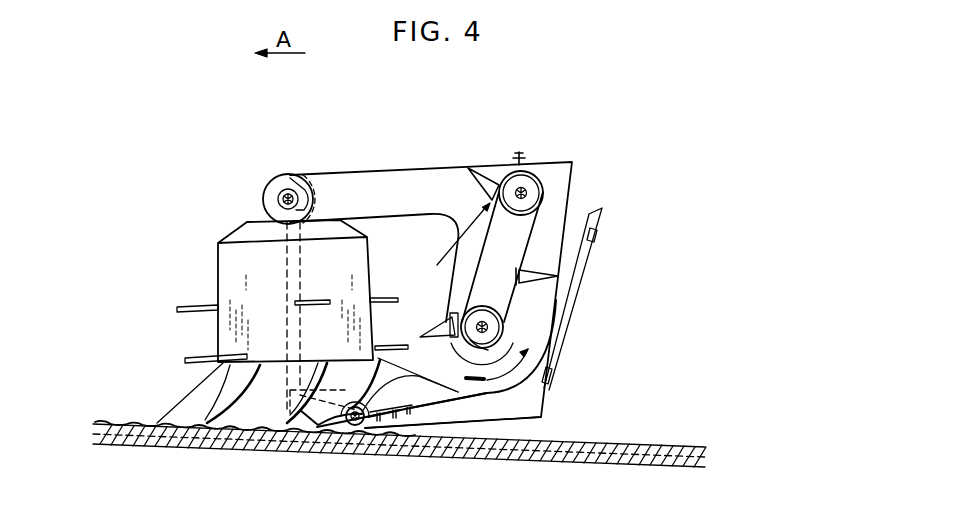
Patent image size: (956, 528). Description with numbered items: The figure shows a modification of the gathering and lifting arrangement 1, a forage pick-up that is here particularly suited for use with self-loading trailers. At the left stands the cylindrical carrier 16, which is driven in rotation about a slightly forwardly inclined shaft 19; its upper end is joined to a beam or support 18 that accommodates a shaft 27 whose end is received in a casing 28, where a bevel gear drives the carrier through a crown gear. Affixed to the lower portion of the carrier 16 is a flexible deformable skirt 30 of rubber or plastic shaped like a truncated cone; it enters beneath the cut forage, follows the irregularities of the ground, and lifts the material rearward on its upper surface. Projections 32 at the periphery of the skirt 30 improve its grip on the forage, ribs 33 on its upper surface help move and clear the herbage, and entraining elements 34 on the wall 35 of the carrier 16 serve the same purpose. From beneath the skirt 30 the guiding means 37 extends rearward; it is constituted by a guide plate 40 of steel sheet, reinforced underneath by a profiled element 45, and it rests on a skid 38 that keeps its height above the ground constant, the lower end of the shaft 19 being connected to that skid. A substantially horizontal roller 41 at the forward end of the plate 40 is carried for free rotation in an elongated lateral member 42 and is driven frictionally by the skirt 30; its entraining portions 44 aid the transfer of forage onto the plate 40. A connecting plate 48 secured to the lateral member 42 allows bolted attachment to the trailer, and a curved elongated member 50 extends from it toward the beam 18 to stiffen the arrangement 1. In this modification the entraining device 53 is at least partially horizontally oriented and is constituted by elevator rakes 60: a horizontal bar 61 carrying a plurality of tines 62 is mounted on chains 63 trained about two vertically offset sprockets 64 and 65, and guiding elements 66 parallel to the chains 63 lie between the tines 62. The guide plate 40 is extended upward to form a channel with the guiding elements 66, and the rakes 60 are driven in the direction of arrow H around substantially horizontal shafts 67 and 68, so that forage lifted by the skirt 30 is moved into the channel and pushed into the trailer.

The gathering and lifting arrangement 1 is at (256, 184).
The cylindrical carrier 16 is at (262, 222).
The beam or support 18 is at (286, 193).
The shaft 19 is at (287, 232).
The shaft 27 is at (297, 190).
The casing 28 is at (275, 192).
The flexible deformable skirt 30 is at (205, 405).
The projections 32 is at (190, 423).
The ribs 33 is at (234, 412).
The entraining elements 34 is at (205, 358).
The wall 35 is at (223, 291).
The guiding means 37 is at (494, 402).
The skid 38 is at (333, 423).
The guide plate 40 is at (482, 407).
The roller 41 is at (362, 425).
The elongated lateral member 42 is at (458, 413).
The entraining portions 44 is at (345, 420).
The profiled element 45 is at (412, 413).
The connecting plate 48 is at (598, 236).
The curved elongated member 50 is at (375, 182).
The entraining device 53 is at (519, 154).
The elevator rakes 60 is at (441, 303).
The horizontal bar 61 is at (498, 185).
The tines 62 is at (470, 168).
The chains 63 is at (543, 217).
The sprocket 64 is at (530, 197).
The sprocket 65 is at (500, 330).
The guiding elements 66 is at (535, 290).
The horizontal shaft 67 is at (524, 189).
The horizontal shaft 68 is at (486, 340).